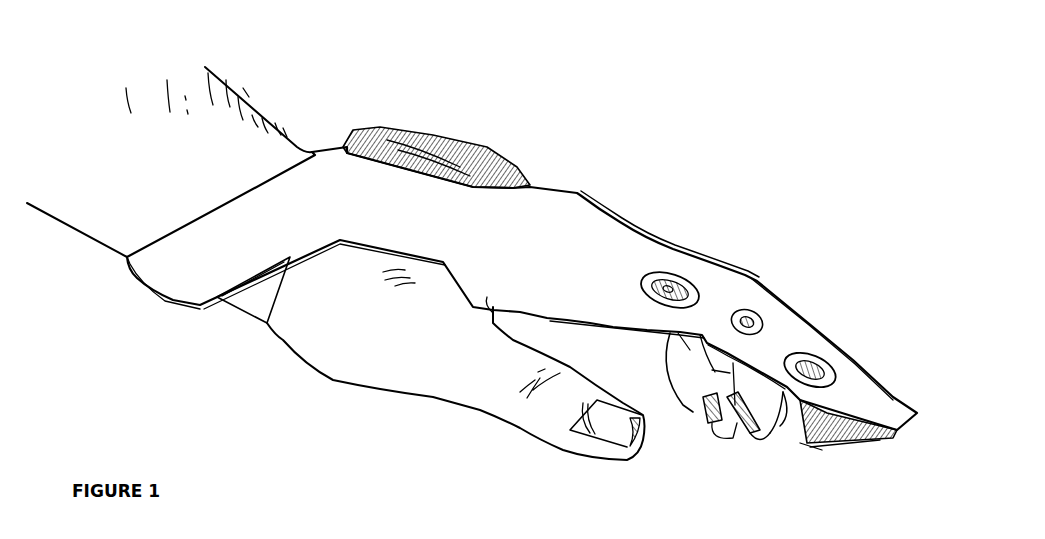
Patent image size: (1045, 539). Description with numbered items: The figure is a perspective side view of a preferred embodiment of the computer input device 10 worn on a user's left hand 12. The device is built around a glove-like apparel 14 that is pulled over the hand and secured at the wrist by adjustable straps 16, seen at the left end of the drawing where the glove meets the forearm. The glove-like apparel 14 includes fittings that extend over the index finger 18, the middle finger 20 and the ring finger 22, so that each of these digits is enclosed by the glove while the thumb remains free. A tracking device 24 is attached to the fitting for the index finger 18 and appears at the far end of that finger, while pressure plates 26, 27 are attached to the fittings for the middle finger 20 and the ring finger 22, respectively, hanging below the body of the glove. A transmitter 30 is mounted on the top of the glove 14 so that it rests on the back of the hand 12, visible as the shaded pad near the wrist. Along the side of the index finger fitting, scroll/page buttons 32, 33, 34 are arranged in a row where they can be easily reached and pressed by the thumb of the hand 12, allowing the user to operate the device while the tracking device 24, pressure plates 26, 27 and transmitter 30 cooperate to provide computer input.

The computer input device 10 is at (592, 134).
The user's left hand 12 is at (307, 340).
The glove-like apparel 14 is at (613, 207).
The adjustable straps 16 is at (163, 293).
The index finger 18 is at (800, 312).
The middle finger 20 is at (785, 397).
The ring finger 22 is at (710, 387).
The tracking device 24 is at (858, 450).
The pressure plate 26 is at (763, 443).
The pressure plate 27 is at (737, 428).
The transmitter 30 is at (443, 130).
The scroll/page button 32 is at (753, 313).
The scroll/page button 33 is at (688, 280).
The scroll/page button 34 is at (827, 367).